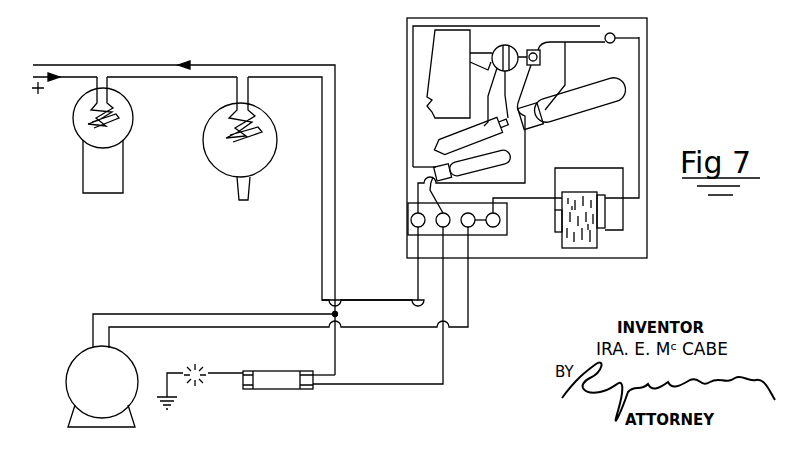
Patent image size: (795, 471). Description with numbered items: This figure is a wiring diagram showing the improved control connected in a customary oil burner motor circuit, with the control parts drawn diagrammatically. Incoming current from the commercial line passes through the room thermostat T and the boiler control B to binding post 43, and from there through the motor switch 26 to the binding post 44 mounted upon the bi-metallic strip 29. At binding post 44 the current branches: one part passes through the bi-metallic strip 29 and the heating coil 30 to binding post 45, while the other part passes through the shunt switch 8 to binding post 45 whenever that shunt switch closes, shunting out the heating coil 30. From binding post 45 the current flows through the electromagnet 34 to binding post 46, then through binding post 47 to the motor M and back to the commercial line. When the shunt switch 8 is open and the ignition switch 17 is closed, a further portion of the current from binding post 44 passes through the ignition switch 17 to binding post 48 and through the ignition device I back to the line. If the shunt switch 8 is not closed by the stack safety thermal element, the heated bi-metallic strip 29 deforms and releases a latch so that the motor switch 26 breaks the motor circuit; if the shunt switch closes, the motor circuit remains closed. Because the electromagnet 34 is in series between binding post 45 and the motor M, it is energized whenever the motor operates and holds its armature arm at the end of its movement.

The mercury tube switch 8 is at (450, 144).
The mercury switch 17 is at (500, 153).
The motor switch 26 is at (615, 96).
The bi-metallic strip 29 is at (478, 52).
The heating coil 30 is at (508, 50).
The electromagnet 34 is at (575, 238).
The binding post 43 is at (411, 221).
The binding post 44 is at (536, 55).
The binding post 45 is at (613, 34).
The binding post 46 is at (500, 222).
The binding post 47 is at (473, 226).
The binding post 48 is at (445, 213).
The room thermostat T is at (83, 168).
The boiler control B is at (225, 175).
The motor M is at (102, 386).
The ignition device I is at (294, 371).